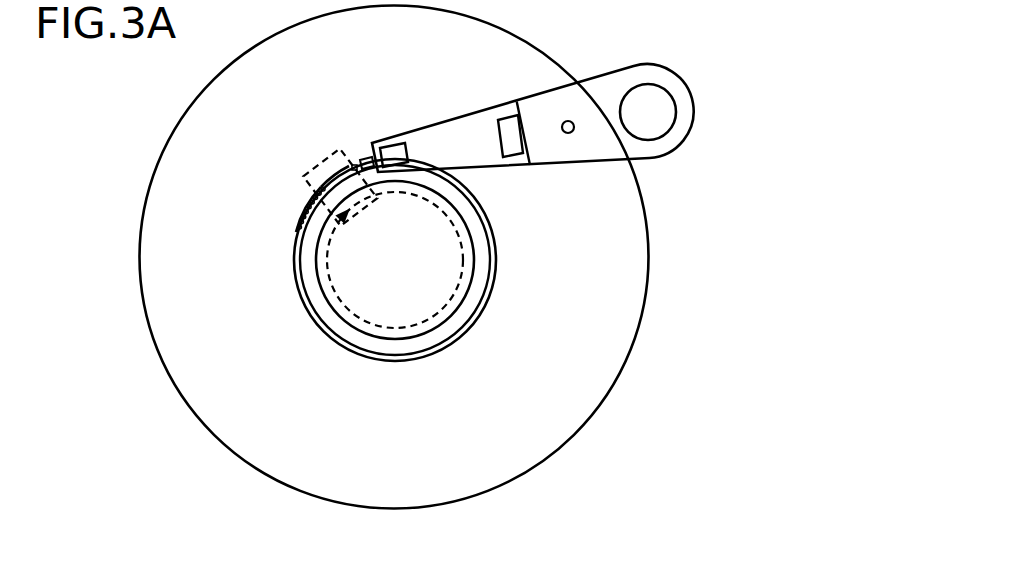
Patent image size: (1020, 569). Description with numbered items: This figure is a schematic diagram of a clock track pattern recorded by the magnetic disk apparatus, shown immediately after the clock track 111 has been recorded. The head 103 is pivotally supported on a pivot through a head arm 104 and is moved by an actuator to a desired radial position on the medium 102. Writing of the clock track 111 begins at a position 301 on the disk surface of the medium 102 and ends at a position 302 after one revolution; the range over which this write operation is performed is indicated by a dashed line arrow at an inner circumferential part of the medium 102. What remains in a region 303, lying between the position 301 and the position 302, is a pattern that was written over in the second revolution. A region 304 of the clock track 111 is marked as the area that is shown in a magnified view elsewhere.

The medium 102 is at (562, 443).
The head 103 is at (393, 157).
The head arm 104 is at (598, 97).
The clock track 111 is at (395, 361).
The position 301 is at (286, 218).
The position 302 is at (315, 171).
The region 303 is at (296, 195).
The region 304 is at (343, 150).